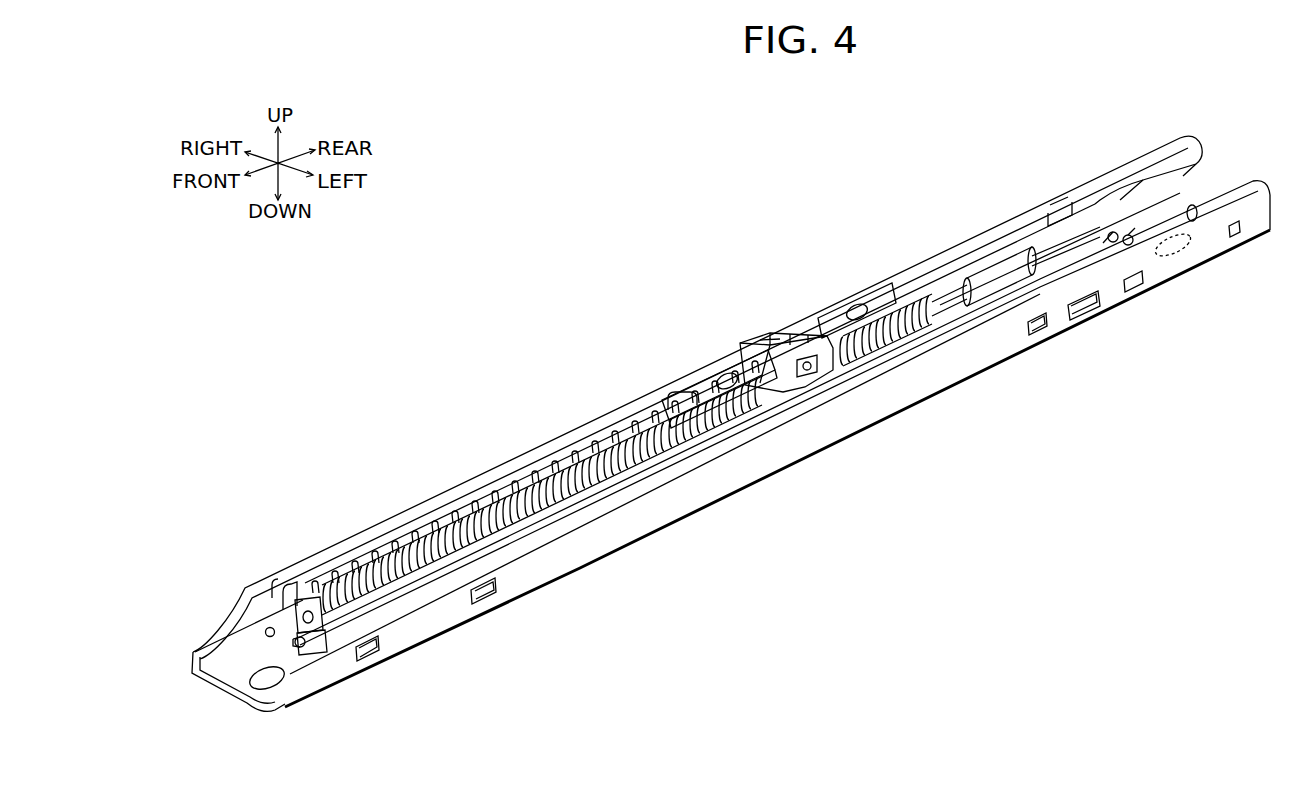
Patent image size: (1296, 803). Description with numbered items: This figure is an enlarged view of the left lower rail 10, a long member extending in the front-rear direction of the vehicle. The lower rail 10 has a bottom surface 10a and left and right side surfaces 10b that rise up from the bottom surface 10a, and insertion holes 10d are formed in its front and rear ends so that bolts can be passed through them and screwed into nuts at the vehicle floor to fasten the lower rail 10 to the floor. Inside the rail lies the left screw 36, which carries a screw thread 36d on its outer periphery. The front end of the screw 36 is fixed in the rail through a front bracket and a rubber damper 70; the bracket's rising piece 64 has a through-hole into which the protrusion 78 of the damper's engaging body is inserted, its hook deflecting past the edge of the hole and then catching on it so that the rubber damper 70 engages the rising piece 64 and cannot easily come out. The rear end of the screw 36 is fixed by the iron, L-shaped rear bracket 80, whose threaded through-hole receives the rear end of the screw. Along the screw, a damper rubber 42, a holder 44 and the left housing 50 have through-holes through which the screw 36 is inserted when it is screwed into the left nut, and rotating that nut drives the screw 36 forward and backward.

The lower rail 10 is at (715, 522).
The bottom surface 10a is at (233, 675).
The side surface 10b is at (247, 618).
The insertion hole 10d is at (265, 680).
The screw 36 is at (483, 508).
The screw thread 36d is at (590, 468).
The damper rubber 42 is at (813, 383).
The holder 44 is at (705, 388).
The left housing 50 is at (763, 315).
The rising piece 64 is at (310, 643).
The rubber damper 70 is at (310, 600).
The protrusion 78 is at (302, 648).
The rear bracket 80 is at (997, 282).